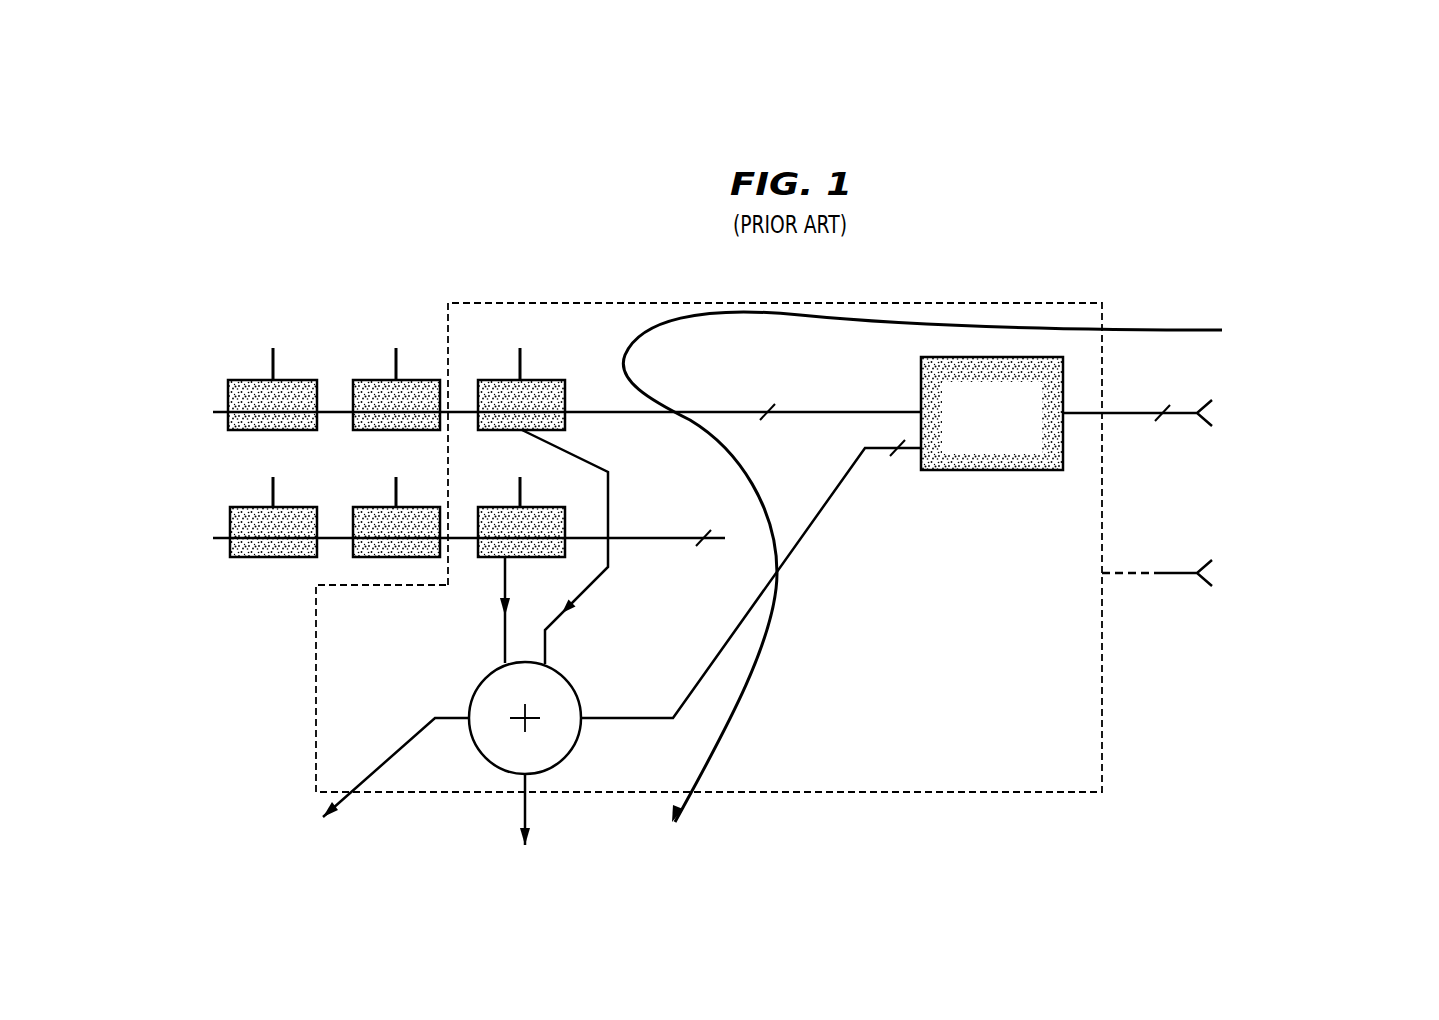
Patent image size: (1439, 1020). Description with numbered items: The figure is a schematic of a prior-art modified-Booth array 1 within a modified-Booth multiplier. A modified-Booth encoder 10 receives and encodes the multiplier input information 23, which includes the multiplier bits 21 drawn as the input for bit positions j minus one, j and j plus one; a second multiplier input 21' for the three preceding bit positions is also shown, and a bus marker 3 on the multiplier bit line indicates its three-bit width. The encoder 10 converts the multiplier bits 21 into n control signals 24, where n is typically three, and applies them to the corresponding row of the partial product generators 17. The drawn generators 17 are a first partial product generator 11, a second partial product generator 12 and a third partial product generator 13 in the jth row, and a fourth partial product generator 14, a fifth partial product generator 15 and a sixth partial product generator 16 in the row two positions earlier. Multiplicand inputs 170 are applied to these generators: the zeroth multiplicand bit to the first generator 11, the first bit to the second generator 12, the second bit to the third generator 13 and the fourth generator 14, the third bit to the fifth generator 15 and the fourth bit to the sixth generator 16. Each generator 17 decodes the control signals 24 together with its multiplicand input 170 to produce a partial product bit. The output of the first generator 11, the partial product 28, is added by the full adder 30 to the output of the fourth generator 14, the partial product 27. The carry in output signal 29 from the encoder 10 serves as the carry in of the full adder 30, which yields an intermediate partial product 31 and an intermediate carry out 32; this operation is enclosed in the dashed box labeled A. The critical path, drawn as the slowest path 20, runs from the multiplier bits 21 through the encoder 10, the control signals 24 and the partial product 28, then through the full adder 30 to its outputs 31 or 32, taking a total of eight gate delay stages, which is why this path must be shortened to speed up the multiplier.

The modified-Booth array 1 is at (1020, 283).
The three-bit input bus indicator 3 is at (1161, 402).
The modified-Booth encoder 10 is at (921, 385).
The first partial product generator 11 is at (545, 380).
The second partial product generator 12 is at (353, 395).
The third partial product generator 13 is at (228, 395).
The fourth partial product generator 14 is at (535, 507).
The fifth partial product generator 15 is at (410, 505).
The sixth partial product generator 16 is at (262, 560).
The partial product generators 17 is at (190, 490).
The slowest path 20 is at (1175, 330).
The multiplier bits 21 is at (1205, 390).
The multiplier input X(j-3,j-2,j-1) 21' is at (1236, 550).
The multiplier input information 23 is at (1355, 500).
The control signals 24 is at (770, 414).
The Y2 receiving partial product PP(2,j-2) 27 is at (507, 586).
The Y0 receiving partial product PP(0,j) 28 is at (610, 503).
The carry in output signal 29 is at (640, 716).
The full adder 30 is at (568, 758).
The intermediate partial product 31 is at (522, 805).
The intermediate carry out 32 is at (388, 754).
The multiplicand inputs 170 is at (254, 355).